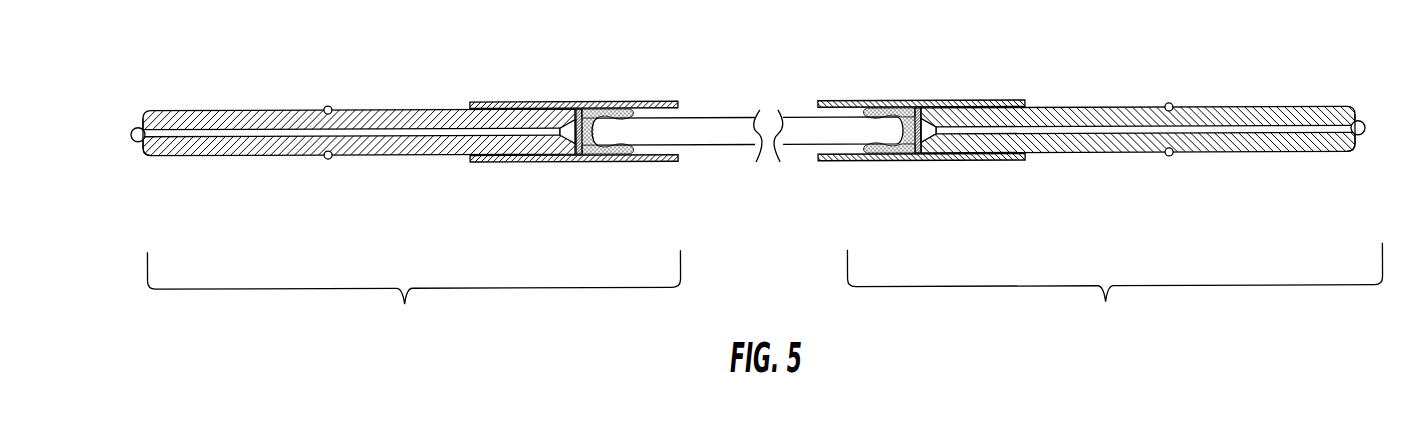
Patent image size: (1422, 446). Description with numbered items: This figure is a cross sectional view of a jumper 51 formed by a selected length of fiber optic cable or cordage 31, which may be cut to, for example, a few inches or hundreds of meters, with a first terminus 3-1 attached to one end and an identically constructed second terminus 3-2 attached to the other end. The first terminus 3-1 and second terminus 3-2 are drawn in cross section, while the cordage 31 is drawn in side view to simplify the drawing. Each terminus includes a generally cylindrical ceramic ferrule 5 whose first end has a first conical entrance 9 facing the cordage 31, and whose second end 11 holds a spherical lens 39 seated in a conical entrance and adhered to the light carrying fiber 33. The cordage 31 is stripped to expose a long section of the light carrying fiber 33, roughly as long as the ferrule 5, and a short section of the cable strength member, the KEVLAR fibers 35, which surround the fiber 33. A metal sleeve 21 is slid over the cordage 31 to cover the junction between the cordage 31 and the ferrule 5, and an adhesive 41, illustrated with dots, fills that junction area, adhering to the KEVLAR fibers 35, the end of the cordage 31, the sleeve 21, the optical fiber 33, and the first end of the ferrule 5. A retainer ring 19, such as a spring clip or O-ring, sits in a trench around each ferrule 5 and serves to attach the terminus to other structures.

The ferrule 5 is at (417, 109).
The first conical entrance 9 is at (577, 120).
The second end 11 is at (143, 158).
The retainer ring 19 is at (329, 106).
The sleeve 21 is at (531, 101).
The fiber optic cable or cordage 31 is at (705, 127).
The light carrying fiber 33 is at (562, 134).
The KEVLAR fibers 35 is at (915, 156).
The lens 39 is at (139, 128).
The adhesive 41 is at (584, 118).
The jumper 51 is at (742, 257).
The first terminus 3-1 is at (413, 297).
The second terminus 3-2 is at (1114, 291).